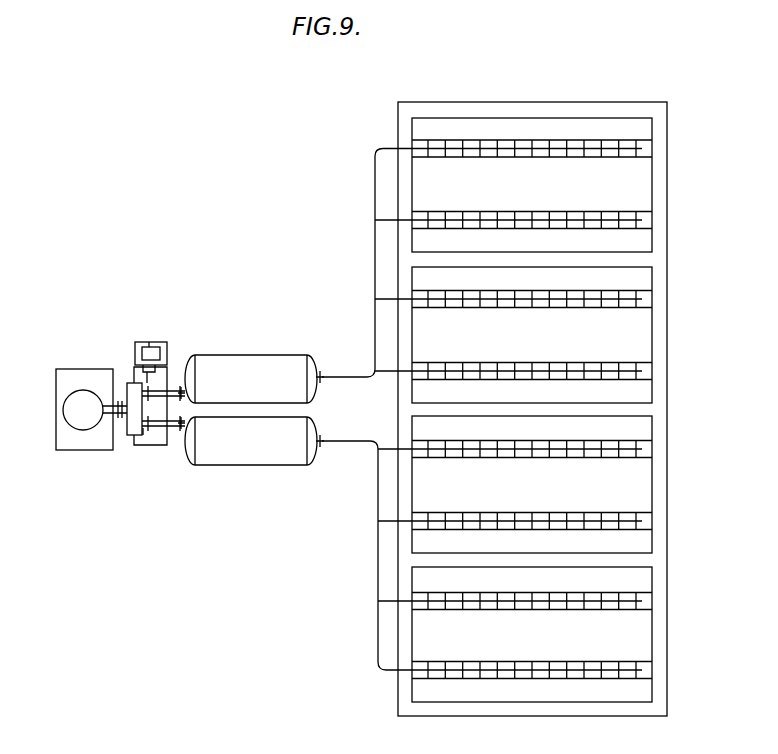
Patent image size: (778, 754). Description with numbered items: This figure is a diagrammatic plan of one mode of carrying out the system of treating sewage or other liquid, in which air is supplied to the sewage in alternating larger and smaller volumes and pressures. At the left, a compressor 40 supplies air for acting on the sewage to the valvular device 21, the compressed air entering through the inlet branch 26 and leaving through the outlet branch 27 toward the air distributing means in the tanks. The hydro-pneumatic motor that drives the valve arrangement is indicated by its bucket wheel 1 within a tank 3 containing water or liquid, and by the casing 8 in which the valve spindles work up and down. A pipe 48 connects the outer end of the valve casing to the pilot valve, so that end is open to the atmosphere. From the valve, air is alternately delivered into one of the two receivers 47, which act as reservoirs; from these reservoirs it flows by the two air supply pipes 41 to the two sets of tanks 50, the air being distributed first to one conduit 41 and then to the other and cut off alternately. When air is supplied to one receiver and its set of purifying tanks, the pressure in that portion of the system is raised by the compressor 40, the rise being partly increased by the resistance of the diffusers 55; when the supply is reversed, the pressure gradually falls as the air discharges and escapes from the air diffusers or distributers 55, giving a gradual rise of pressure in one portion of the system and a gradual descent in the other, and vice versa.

The bucket wheel 1 is at (155, 342).
The tank 3 is at (167, 355).
The casing 8 is at (137, 388).
The valve 21 is at (130, 397).
The inlet branch 26 is at (110, 415).
The outlet branch 27 is at (148, 430).
The compressor 40 is at (75, 410).
The air supply pipe 41 is at (347, 377).
The receiver 47 is at (251, 410).
The pipe 48 is at (160, 445).
The tank 50 is at (532, 410).
The diffuser 55 is at (593, 153).